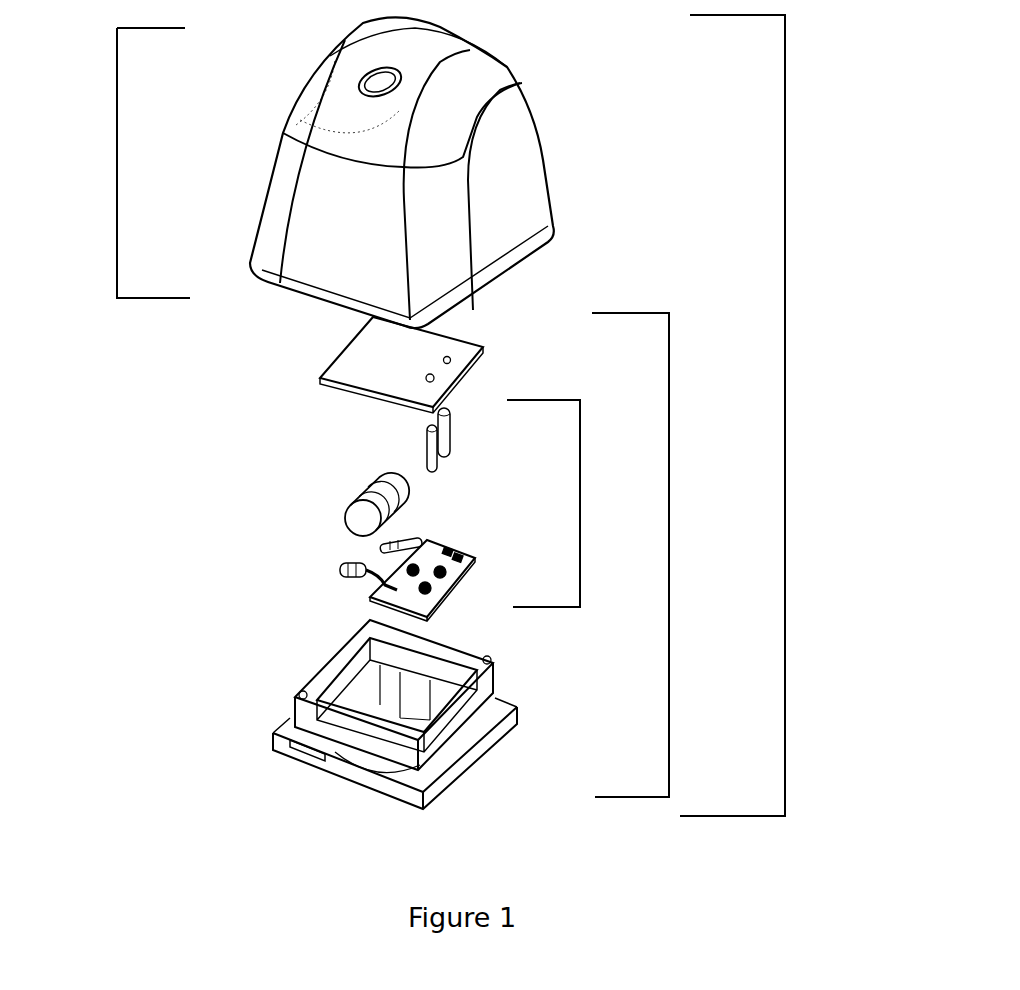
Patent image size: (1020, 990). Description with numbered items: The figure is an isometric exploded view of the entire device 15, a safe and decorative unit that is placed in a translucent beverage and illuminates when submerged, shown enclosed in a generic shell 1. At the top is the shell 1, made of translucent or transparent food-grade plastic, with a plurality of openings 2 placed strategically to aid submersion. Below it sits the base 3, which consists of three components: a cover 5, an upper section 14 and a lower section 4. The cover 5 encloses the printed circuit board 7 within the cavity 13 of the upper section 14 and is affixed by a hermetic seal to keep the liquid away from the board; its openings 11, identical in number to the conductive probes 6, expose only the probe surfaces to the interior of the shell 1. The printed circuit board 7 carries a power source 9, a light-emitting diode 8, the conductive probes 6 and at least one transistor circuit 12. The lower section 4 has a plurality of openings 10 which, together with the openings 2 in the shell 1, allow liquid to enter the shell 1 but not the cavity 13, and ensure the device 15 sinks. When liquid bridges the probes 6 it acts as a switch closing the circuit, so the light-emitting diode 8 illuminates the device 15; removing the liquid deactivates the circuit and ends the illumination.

The shell 1 is at (117, 165).
The openings 2 is at (388, 82).
The base 3 is at (669, 565).
The lower section 4 is at (394, 709).
The cover 5 is at (406, 365).
The conductive probes 6 is at (449, 440).
The printed circuit board 7 is at (580, 520).
The light-emitting diode 8 is at (400, 573).
The power source 9 is at (365, 520).
The openings 10 is at (303, 750).
The openings 11 is at (450, 357).
The transistor circuit 12 is at (450, 540).
The cavity 13 is at (400, 667).
The upper section 14 is at (307, 720).
The device 15 is at (785, 388).